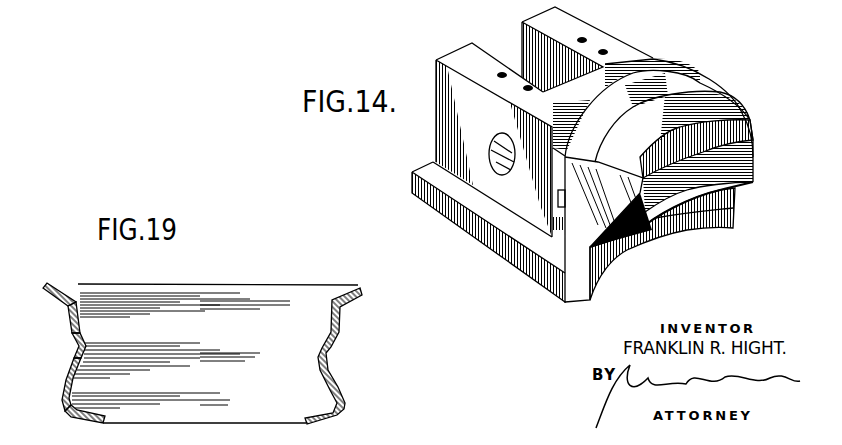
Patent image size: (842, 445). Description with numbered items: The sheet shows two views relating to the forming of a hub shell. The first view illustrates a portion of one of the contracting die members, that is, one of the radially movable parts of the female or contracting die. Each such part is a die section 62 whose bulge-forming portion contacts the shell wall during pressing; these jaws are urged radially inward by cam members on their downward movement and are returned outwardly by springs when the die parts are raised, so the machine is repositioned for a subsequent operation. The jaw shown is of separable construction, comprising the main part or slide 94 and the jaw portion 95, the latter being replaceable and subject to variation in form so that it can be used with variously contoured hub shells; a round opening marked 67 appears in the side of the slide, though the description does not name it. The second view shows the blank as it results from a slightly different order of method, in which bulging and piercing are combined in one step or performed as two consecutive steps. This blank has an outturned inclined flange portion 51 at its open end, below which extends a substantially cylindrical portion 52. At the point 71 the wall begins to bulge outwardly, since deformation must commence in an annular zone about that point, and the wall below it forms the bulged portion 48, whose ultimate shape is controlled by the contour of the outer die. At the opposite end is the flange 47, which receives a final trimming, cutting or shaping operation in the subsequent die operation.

In FIG. 14, the main part or slide 94 is at (437, 133).
In FIG. 14, the die section 62 is at (625, 55).
In FIG. 14, the hole 67 is at (497, 168).
In FIG. 14, the jaw portion 95 is at (590, 233).
In FIG. 19, the outturned inclined flange portion 51 is at (48, 288).
In FIG. 19, the substantially cylindrical portion 52 is at (70, 322).
In FIG. 19, the point 71 is at (75, 352).
In FIG. 19, the bulged portion 48 is at (64, 397).
In FIG. 19, the flange 47 is at (76, 417).